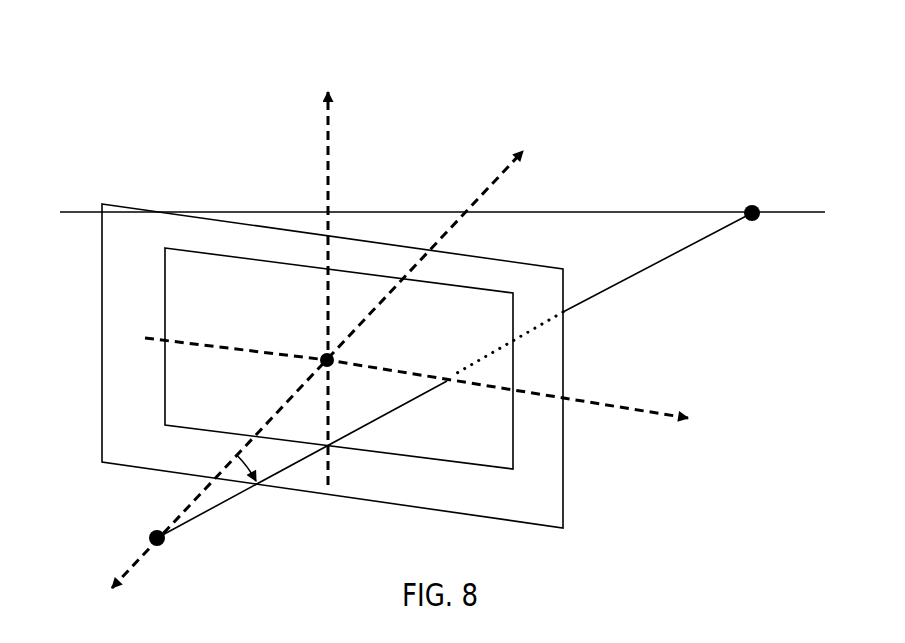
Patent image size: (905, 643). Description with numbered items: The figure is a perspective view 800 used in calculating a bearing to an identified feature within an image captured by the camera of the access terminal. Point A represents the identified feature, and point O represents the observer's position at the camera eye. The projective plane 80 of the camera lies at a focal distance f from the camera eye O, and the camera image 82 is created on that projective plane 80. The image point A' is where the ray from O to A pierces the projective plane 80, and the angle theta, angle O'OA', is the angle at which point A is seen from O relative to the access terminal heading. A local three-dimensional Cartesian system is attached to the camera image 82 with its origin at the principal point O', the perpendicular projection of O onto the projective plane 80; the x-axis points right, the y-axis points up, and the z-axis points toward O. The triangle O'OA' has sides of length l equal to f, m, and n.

The perspective view 800 is at (626, 83).
The projective plane 80 is at (332, 366).
The camera image 82 is at (339, 358).